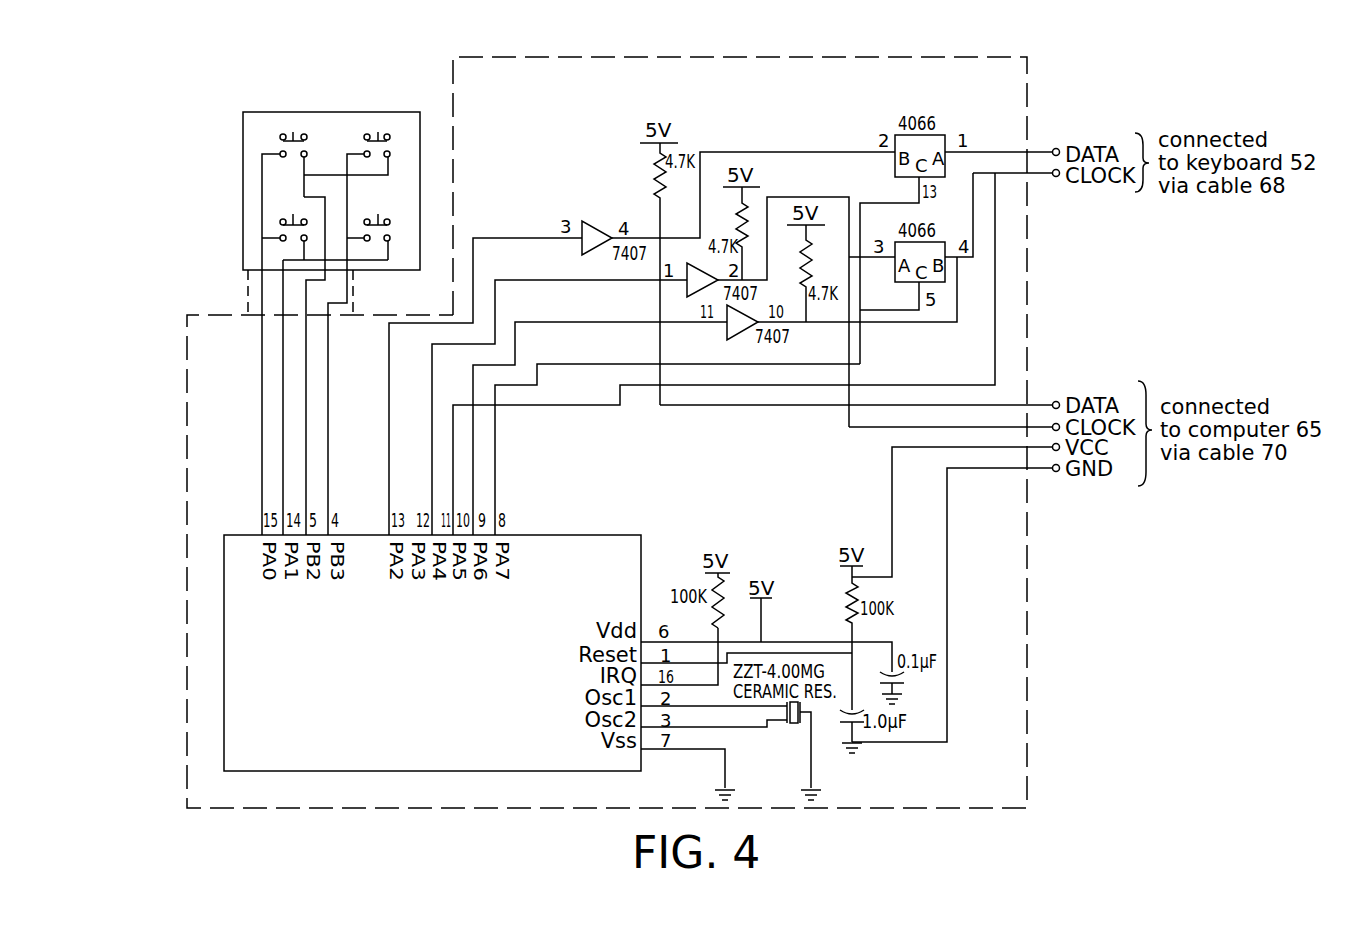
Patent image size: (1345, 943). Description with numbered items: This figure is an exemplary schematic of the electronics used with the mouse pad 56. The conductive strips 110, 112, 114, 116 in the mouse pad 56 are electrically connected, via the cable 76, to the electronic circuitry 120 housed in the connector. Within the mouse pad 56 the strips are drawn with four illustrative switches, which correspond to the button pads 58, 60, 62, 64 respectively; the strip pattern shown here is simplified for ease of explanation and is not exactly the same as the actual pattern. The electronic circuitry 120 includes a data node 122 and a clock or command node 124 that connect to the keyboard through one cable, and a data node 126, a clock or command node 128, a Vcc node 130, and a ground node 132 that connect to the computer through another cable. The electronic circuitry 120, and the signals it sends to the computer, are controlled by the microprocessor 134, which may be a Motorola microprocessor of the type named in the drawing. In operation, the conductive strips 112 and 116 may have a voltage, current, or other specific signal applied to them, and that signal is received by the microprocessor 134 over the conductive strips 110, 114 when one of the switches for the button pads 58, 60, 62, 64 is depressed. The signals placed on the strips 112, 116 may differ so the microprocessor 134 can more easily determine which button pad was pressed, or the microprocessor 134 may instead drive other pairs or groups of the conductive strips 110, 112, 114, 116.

The mouse pad 56 is at (238, 140).
The button pad 58 is at (292, 133).
The button pad 60 is at (293, 214).
The button pad 62 is at (378, 214).
The button pad 64 is at (378, 133).
The cable 76 is at (353, 300).
The conductive strip 110 is at (283, 262).
The conductive strip 112 is at (347, 197).
The conductive strip 114 is at (392, 162).
The conductive strip 116 is at (262, 185).
The electronic circuitry 120 is at (699, 54).
The data node 122 is at (998, 152).
The clock or command node 124 is at (1013, 175).
The data node 126 is at (1013, 404).
The clock or command node 128 is at (992, 427).
The Vcc node 130 is at (1003, 447).
The ground node 132 is at (1042, 470).
The microprocessor 134 is at (224, 682).